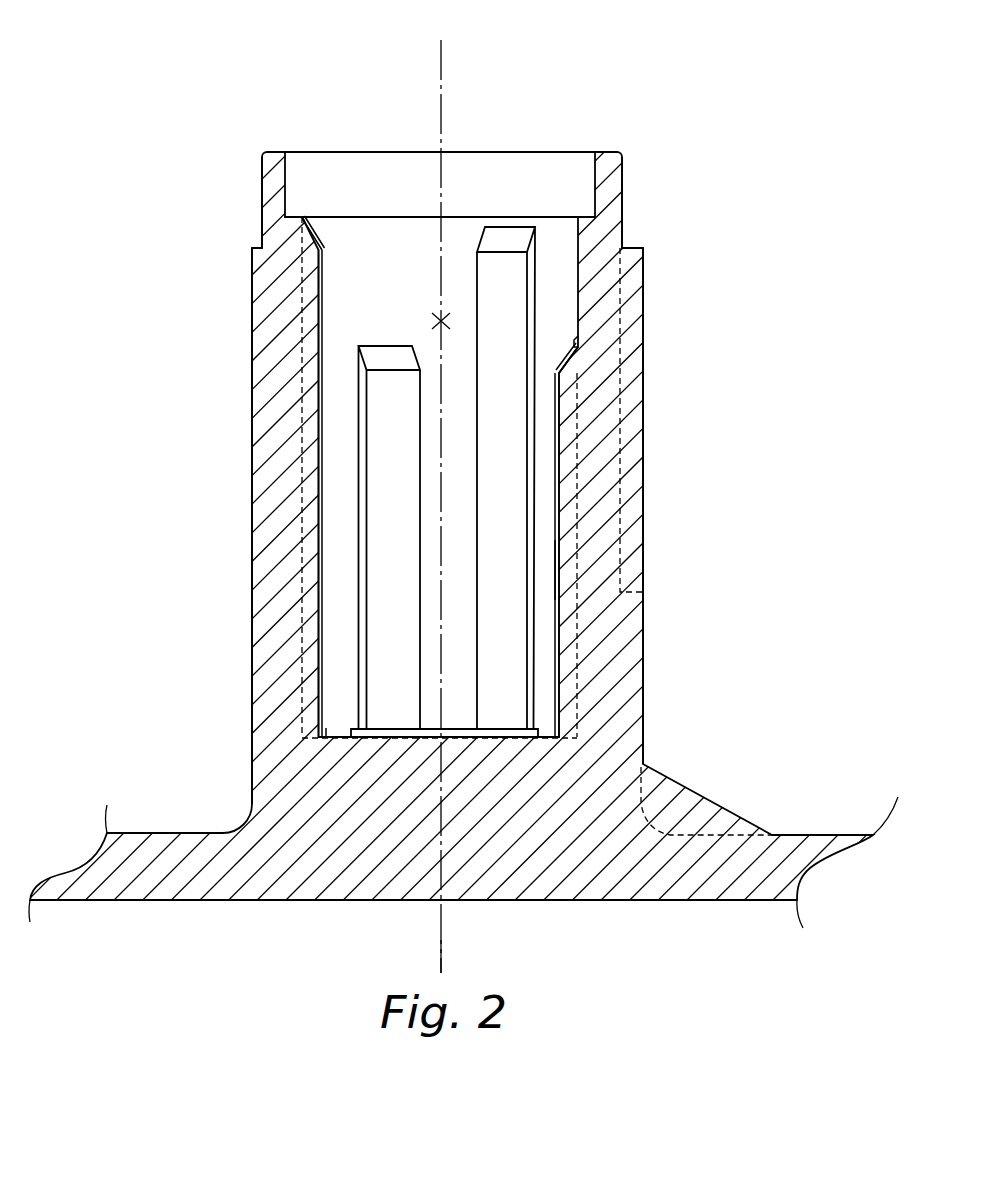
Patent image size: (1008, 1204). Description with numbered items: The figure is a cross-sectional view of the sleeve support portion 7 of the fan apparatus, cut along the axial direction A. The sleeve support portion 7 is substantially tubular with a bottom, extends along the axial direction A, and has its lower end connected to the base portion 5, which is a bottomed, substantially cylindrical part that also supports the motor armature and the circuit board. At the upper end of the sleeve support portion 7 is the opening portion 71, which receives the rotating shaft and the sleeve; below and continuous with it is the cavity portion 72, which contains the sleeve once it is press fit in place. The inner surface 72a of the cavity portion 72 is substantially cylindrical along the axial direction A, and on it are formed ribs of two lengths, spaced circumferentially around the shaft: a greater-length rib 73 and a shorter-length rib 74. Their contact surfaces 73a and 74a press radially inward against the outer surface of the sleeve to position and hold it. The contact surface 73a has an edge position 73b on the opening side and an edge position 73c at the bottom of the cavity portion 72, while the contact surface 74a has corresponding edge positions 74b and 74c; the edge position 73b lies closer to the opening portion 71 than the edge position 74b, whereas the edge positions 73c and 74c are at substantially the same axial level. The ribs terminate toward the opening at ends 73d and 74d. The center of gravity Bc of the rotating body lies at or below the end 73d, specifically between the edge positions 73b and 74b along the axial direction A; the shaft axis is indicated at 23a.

The base portion 5 is at (103, 902).
The sleeve support portion 7 is at (253, 362).
The opening portion 71 is at (595, 178).
The cavity portion 72 is at (332, 447).
The inner surface 72a is at (410, 232).
The greater-length rib 73 is at (507, 257).
The contact surface 73a is at (322, 293).
The edge position 73b is at (326, 243).
The edge position 73c is at (325, 735).
The end 73d is at (303, 217).
The shorter-length rib 74 is at (378, 598).
The contact surface 74a is at (556, 575).
The edge position 74b is at (556, 372).
The edge position 74c is at (556, 735).
The end 74d is at (585, 330).
The center axis 23a is at (443, 52).
The center of gravity Bc is at (433, 322).
The axial direction A is at (441, 948).